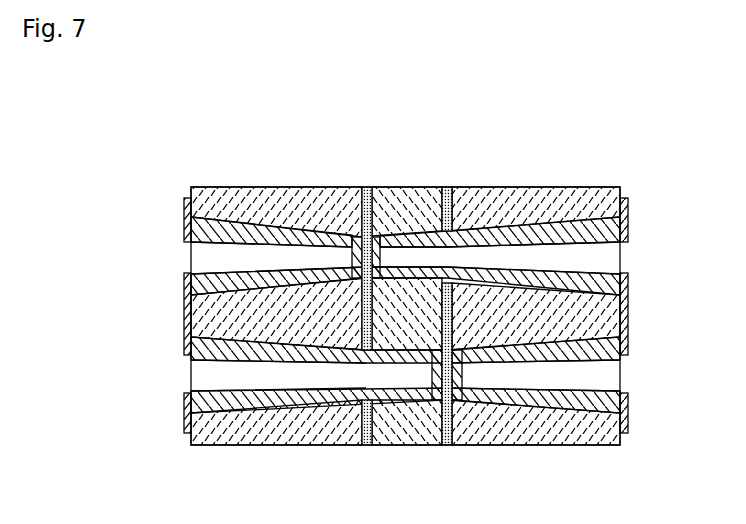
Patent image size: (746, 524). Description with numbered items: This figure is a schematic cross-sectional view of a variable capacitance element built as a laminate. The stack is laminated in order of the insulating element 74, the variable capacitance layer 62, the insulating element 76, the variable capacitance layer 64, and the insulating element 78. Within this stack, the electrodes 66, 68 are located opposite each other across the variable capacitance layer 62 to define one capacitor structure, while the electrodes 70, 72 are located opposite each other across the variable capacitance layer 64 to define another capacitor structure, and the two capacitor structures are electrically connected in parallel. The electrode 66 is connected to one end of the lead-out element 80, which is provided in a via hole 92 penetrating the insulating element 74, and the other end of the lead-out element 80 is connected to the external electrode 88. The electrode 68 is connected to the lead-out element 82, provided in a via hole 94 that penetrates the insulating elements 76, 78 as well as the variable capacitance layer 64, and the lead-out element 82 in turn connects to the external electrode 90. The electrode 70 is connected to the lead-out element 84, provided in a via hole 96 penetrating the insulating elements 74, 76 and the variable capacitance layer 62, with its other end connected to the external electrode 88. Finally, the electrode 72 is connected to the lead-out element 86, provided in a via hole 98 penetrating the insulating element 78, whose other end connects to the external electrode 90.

The variable capacitance layer 62 is at (366, 187).
The variable capacitance layer 64 is at (448, 187).
The electrode 66 is at (354, 241).
The electrode 68 is at (377, 240).
The electrode 70 is at (434, 368).
The electrode 72 is at (458, 394).
The insulating element 74 is at (216, 193).
The insulating element 76 is at (388, 434).
The insulating element 78 is at (594, 192).
The lead-out element 80 is at (292, 236).
The lead-out element 82 is at (519, 230).
The lead-out element 84 is at (292, 397).
The lead-out element 86 is at (538, 397).
The external electrode 88 is at (190, 318).
The external electrode 90 is at (622, 317).
The via hole 92 is at (201, 259).
The via hole 94 is at (608, 257).
The via hole 96 is at (200, 372).
The via hole 98 is at (608, 376).